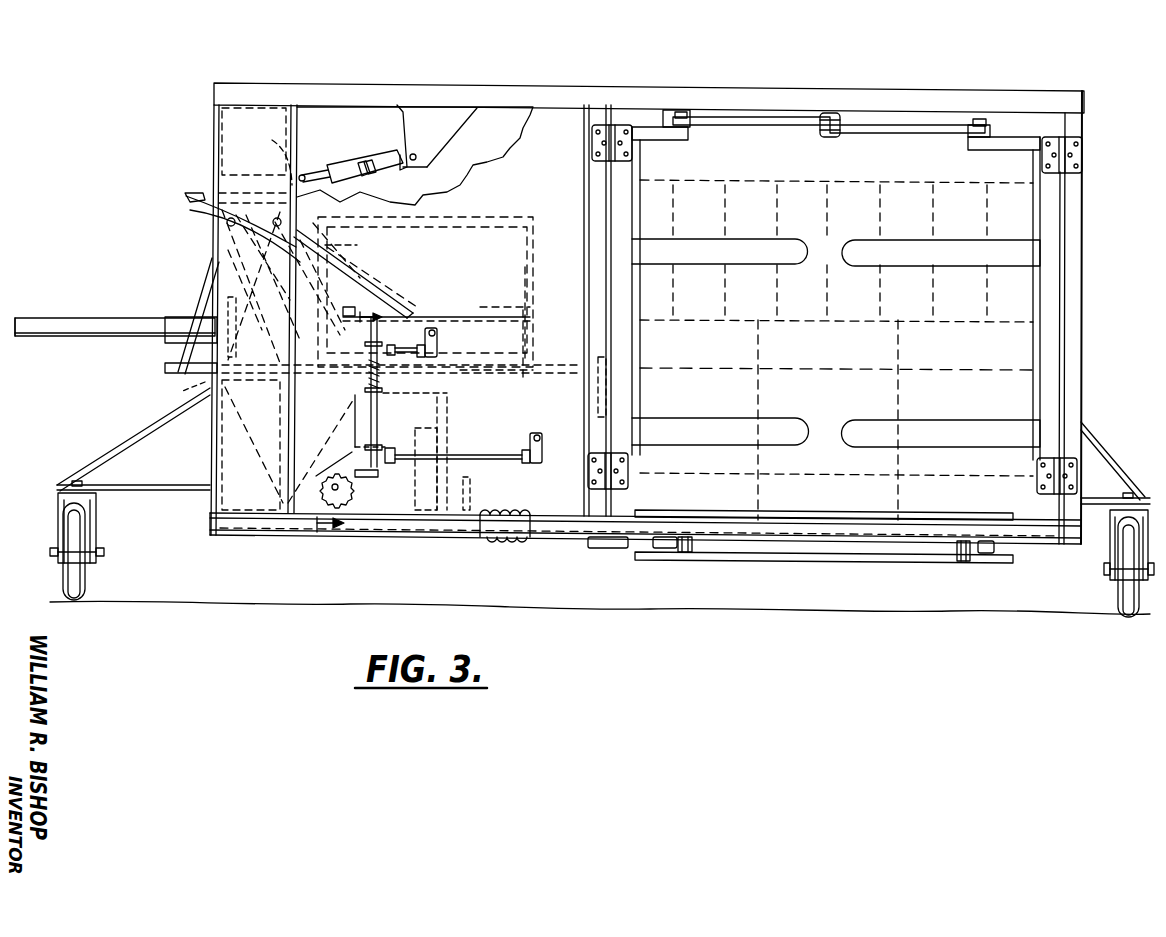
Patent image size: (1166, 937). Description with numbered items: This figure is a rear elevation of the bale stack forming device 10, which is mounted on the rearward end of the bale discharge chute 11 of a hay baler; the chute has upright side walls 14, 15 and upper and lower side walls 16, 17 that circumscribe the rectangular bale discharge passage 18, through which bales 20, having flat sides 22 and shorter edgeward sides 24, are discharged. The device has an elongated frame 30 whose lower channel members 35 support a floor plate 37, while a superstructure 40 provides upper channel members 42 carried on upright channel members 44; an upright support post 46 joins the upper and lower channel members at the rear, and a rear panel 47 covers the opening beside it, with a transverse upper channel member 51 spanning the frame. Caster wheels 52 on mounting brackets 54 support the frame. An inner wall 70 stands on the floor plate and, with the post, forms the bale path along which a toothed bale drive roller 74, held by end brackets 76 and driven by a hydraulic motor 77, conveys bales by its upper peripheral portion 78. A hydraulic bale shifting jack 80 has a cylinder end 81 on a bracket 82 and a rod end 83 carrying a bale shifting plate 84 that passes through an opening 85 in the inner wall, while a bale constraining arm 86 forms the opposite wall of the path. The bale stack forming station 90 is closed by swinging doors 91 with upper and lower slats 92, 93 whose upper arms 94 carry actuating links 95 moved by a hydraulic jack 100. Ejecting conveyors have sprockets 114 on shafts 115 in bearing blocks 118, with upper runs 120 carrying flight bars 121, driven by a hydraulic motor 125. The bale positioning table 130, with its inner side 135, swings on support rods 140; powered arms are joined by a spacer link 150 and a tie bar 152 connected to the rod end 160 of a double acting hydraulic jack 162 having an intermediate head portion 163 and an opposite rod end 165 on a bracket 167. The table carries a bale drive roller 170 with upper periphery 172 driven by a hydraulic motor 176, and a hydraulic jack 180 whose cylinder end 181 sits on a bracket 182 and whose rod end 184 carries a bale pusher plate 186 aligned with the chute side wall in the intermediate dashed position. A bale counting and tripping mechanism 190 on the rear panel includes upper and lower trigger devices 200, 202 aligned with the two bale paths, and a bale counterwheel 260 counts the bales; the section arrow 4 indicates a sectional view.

The section line arrow 4 is at (343, 436).
The bale stack forming device 10 is at (732, 84).
The bale discharge chute 11 is at (505, 218).
The side wall 14 is at (401, 303).
The side wall 15 is at (527, 272).
The upper side wall 16 is at (436, 230).
The lower side wall 17 is at (513, 390).
The bale discharge passage 18 is at (474, 222).
The bales 20 is at (722, 180).
The flat sides 22 is at (768, 180).
The edgeward sides 24 is at (918, 320).
The frame 30 is at (210, 130).
The channel members 35 is at (207, 532).
The floor plate 37 is at (230, 507).
The superstructure 40 is at (922, 98).
The upper channel members 42 is at (213, 108).
The upright channel members 44 is at (228, 158).
The upright support post 46 is at (588, 172).
The rear panel 47 is at (525, 108).
The upper channel member 51 is at (632, 100).
The caster wheels 52 is at (64, 581).
The mounting brackets 54 is at (143, 492).
The inner wall 70 is at (470, 386).
The bale drive roller 74 is at (486, 537).
The end brackets 76 is at (430, 532).
The hydraulic motor 77 is at (456, 535).
The upper peripheral portion 78 is at (510, 515).
The hydraulic bale shifting jack 80 is at (378, 440).
The cylinder end 81 is at (262, 466).
The bracket 82 is at (415, 498).
The rod end 83 is at (392, 548).
The bale shifting plate 84 is at (452, 408).
The opening 85 is at (466, 475).
The bale constraining arm 86 is at (606, 372).
The bale stack forming station 90 is at (812, 356).
The swinging doors 91 is at (650, 222).
The upper slats 92 is at (795, 262).
The lower slats 93 is at (862, 418).
The upper arms 94 is at (673, 140).
The actuating links 95 is at (880, 125).
The hydraulic jack 100 is at (822, 115).
The sprockets 114 is at (692, 548).
The shafts 115 is at (858, 562).
The bearing blocks 118 is at (665, 549).
The upper runs 120 is at (688, 510).
The flight bars 121 is at (805, 510).
The hydraulic motor 125 is at (608, 550).
The bale positioning table 130 is at (163, 370).
The inner side 135 is at (410, 366).
The support rods 140 is at (230, 212).
The spacer link 150 is at (265, 156).
The tie bar 152 is at (316, 184).
The rod end 160 is at (338, 182).
The double acting hydraulic jack 162 is at (401, 135).
The intermediate head portion 163 is at (397, 108).
The rod end 165 is at (396, 143).
The bracket 167 is at (447, 117).
The bale drive roller 170 is at (336, 415).
The upper periphery 172 is at (362, 282).
The hydraulic motor 176 is at (228, 390).
The hydraulic jack 180 is at (88, 318).
The cylinder end 181 is at (15, 318).
The bracket 182 is at (170, 353).
The rod end 184 is at (205, 282).
The bale pusher plate 186 is at (200, 384).
The bale counting and tripping mechanism 190 is at (360, 480).
The upper trigger device 200 is at (446, 338).
The lower trigger device 202 is at (548, 446).
The bale counterwheel 260 is at (338, 500).